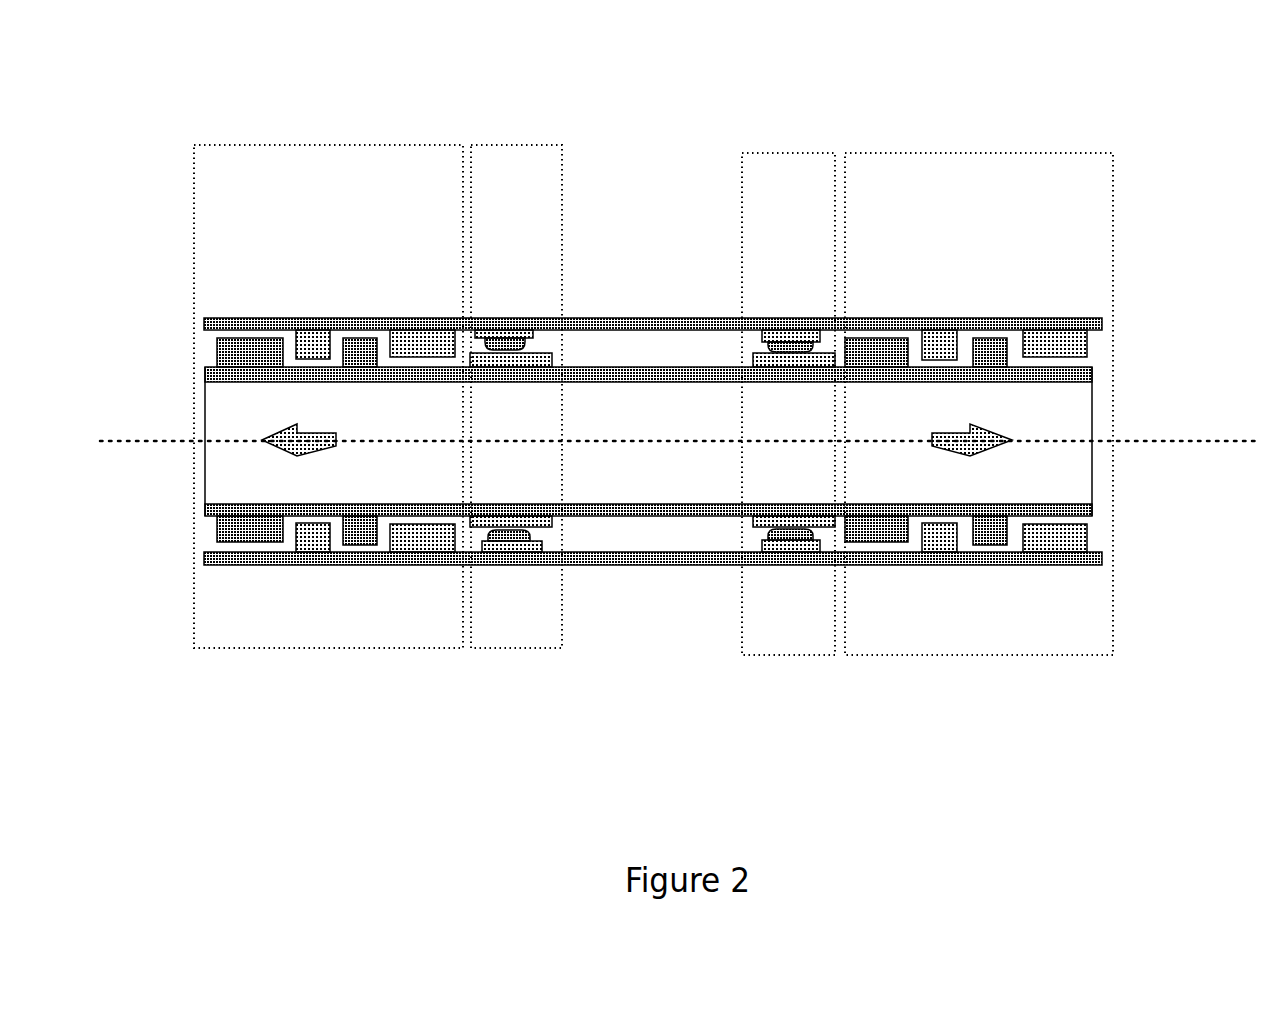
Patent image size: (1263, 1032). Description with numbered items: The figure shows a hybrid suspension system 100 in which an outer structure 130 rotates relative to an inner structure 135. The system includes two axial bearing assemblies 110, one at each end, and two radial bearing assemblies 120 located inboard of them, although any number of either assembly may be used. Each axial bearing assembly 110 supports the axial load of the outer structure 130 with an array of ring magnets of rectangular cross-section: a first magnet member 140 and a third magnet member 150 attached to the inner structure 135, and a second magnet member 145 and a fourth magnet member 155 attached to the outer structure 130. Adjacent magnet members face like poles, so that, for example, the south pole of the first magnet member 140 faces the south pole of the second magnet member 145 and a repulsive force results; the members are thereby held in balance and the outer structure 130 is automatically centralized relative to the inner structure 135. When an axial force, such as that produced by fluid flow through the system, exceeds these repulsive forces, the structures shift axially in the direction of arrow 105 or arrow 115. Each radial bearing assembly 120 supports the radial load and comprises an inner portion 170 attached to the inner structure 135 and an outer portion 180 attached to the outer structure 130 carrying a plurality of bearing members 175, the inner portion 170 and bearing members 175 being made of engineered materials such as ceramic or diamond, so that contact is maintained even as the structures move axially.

The hybrid suspension system 100 is at (963, 72).
The arrow 105 is at (1012, 440).
The axial bearing assembly 110 is at (653, 400).
The arrow 115 is at (262, 441).
The radial bearing assembly 120 is at (653, 400).
The outer structure 130 is at (607, 325).
The inner structure 135 is at (652, 374).
The first magnet member 140 is at (240, 532).
The second magnet member 145 is at (314, 538).
The third magnet member 150 is at (360, 533).
The fourth magnet member 155 is at (432, 540).
The inner portion 170 is at (747, 513).
The bearing members 175 is at (790, 531).
The outer portion 180 is at (810, 549).